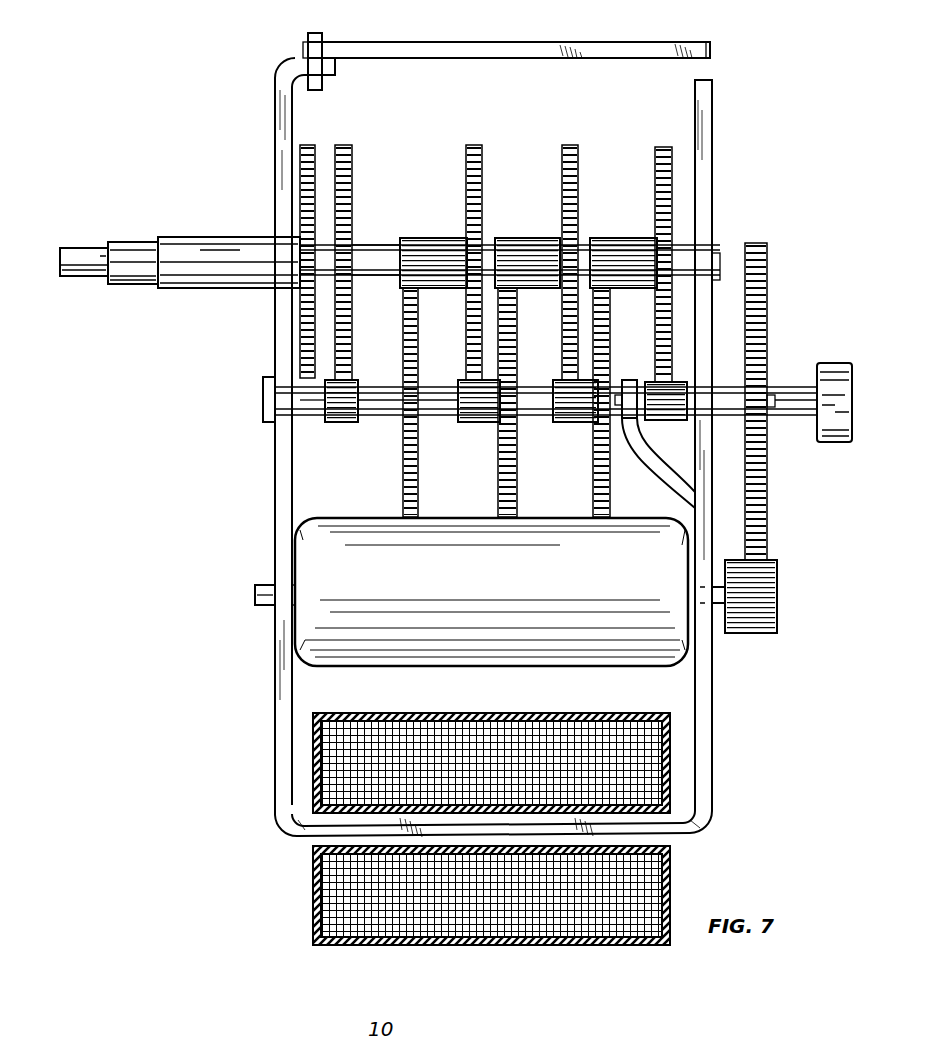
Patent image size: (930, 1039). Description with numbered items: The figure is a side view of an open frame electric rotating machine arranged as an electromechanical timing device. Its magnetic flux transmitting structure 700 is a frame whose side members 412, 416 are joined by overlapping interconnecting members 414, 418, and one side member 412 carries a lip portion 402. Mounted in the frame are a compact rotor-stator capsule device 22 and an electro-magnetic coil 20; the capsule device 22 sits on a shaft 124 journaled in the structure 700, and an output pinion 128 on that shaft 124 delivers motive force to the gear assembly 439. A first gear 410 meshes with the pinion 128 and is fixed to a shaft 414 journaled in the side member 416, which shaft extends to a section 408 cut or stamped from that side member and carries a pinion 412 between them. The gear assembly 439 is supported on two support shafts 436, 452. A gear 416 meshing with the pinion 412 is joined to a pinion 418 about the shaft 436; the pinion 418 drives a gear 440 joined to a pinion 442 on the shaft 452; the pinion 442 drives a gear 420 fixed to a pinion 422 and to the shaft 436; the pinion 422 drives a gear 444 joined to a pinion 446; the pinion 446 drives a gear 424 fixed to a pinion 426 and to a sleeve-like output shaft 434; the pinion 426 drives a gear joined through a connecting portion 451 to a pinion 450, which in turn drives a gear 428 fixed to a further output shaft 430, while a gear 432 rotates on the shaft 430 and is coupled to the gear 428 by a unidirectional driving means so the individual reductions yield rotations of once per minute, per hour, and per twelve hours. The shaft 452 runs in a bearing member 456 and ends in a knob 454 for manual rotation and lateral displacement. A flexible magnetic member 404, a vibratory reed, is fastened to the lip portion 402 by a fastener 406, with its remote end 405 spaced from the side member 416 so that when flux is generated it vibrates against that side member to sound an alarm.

The magnetic flux transmitting structure 700 is at (272, 490).
The flexible magnetic member 404 is at (460, 42).
The remote end 405 is at (712, 50).
The fastener 406 is at (315, 33).
The lip portion 402 is at (335, 70).
The gear assembly 439 is at (529, 92).
The support shaft 436 is at (88, 248).
The output shaft 434 is at (136, 250).
The output shaft 430 is at (260, 238).
The pinion 422 is at (528, 288).
The gear 432 is at (300, 160).
The gear 428 is at (352, 160).
The gear 424 is at (482, 176).
The gear 420 is at (578, 176).
The side member 416 is at (666, 147).
The pinion 426 is at (436, 252).
The interconnecting member 418 is at (645, 242).
The gear 444 is at (498, 494).
The gear 440 is at (593, 491).
The interconnecting member 414 is at (729, 400).
The bearing member 456 is at (265, 402).
The support shaft 452 is at (305, 410).
The connecting portion 451 is at (384, 415).
The pinion 450 is at (352, 425).
The pinion 446 is at (489, 424).
The pinion 442 is at (582, 424).
The side member 412 is at (654, 420).
The section 408 is at (650, 458).
The first gear 410 is at (767, 280).
The knob 454 is at (832, 445).
The output pinion 128 is at (777, 618).
The shaft 124 is at (262, 586).
The compact rotor-stator capsule device 22 is at (498, 600).
The electro-magnetic coil 20 is at (478, 712).